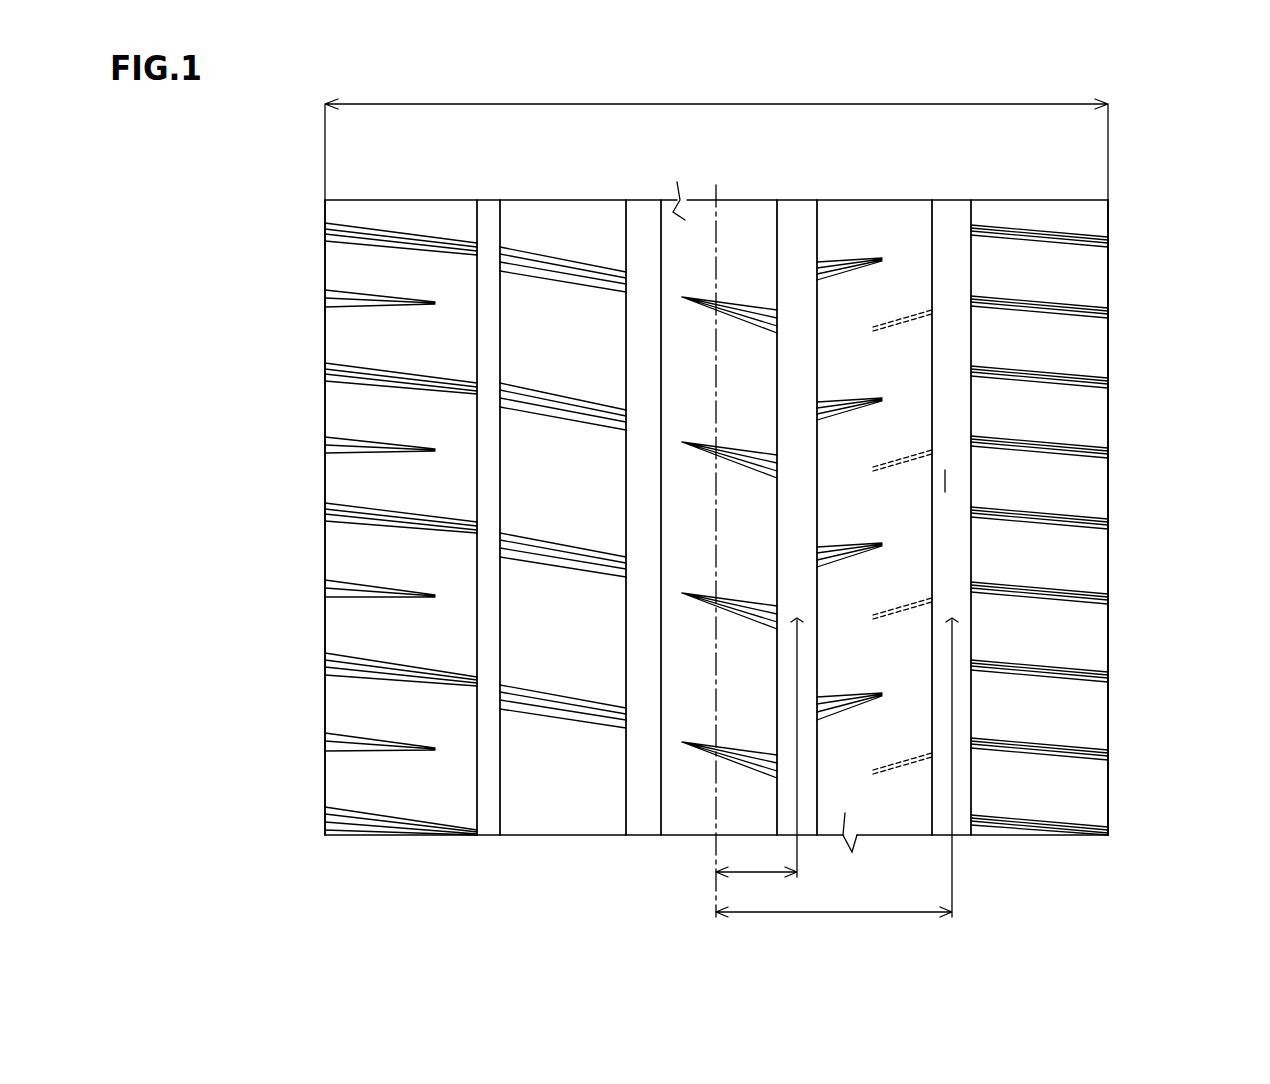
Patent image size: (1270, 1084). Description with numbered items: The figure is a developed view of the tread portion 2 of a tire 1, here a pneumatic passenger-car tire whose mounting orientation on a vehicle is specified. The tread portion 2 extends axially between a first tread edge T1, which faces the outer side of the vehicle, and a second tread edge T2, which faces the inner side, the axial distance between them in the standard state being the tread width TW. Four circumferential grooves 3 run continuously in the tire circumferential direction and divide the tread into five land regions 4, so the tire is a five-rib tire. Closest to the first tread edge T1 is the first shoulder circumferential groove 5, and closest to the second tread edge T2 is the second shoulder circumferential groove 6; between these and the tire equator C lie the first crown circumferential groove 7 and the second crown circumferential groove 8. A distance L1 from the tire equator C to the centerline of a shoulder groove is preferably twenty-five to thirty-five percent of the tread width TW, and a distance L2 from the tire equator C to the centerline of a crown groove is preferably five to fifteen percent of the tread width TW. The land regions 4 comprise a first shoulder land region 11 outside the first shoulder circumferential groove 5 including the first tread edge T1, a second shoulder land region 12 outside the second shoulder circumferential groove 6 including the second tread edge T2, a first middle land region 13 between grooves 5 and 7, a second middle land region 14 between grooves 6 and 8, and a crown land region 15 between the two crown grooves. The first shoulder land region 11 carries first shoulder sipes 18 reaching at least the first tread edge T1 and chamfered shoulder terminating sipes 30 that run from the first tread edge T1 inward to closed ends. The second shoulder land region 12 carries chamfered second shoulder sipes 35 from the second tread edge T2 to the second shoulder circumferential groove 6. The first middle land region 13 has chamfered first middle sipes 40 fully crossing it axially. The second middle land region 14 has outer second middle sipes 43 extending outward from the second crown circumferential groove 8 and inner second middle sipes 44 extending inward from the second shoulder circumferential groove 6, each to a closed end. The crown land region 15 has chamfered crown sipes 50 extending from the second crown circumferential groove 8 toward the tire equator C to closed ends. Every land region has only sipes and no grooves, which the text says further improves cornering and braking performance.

The tire 1 is at (850, 155).
The tread portion 2 is at (694, 165).
The circumferential grooves 3 is at (958, 486).
The land regions 4 is at (1095, 245).
The first shoulder circumferential groove 5 is at (492, 247).
The second shoulder circumferential groove 6 is at (956, 224).
The first crown circumferential groove 7 is at (649, 229).
The second crown circumferential groove 8 is at (805, 226).
The first shoulder land region 11 is at (413, 255).
The second shoulder land region 12 is at (1015, 241).
The first middle land region 13 is at (576, 233).
The second middle land region 14 is at (896, 226).
The crown land region 15 is at (755, 226).
The first shoulder sipes 18 is at (400, 377).
The shoulder terminating sipes 30 is at (383, 306).
The second shoulder sipes 35 is at (1050, 662).
The first middle sipes 40 is at (533, 412).
The outer second middle sipes 43 is at (873, 396).
The inner second middle sipes 44 is at (925, 597).
The crown sipes 50 is at (778, 310).
The first tread edge T1 is at (323, 257).
The second tread edge T2 is at (1112, 258).
The tread width TW is at (716, 137).
The tire equator C is at (714, 535).
The distance from tire equator to shoulder groove centerline L1 is at (837, 782).
The distance from tire equator to crown groove centerline L2 is at (759, 762).